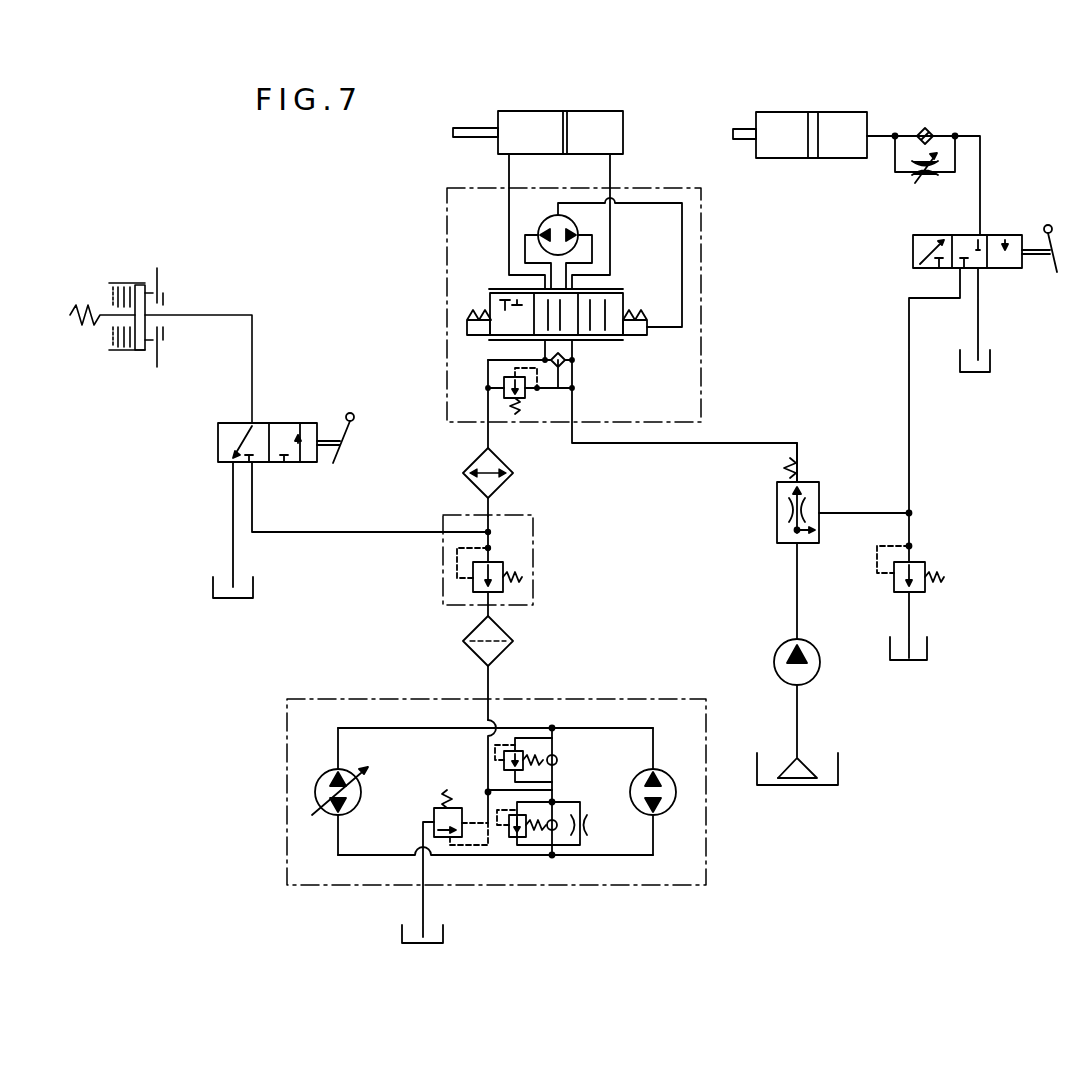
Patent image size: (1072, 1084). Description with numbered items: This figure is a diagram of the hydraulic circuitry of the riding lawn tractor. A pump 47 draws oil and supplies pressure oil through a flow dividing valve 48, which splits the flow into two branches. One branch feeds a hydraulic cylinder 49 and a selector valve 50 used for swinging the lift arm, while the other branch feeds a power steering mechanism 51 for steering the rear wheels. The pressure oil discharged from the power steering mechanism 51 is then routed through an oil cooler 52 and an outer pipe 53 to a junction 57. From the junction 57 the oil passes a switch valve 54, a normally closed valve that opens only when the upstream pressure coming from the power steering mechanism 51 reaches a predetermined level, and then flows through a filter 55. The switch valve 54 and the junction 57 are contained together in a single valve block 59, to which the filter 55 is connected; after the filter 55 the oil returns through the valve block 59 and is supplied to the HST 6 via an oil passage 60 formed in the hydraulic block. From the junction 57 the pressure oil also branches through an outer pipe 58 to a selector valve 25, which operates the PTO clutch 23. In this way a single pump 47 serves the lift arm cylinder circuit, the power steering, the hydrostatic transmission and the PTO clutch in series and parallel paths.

The HST 6 is at (657, 698).
The PTO clutch 23 is at (127, 357).
The selector valve 25 is at (283, 423).
The pump 47 is at (778, 667).
The flow dividing valve 48 is at (777, 517).
The hydraulic cylinder 49 is at (832, 158).
The selector valve 50 is at (1007, 235).
The power steering mechanism 51 is at (445, 258).
The oil cooler 52 is at (507, 463).
The outer pipe 53 is at (487, 507).
The switch valve 54 is at (503, 590).
The filter 55 is at (507, 652).
The junction 57 is at (492, 533).
The outer pipe 58 is at (300, 533).
The valve block 59 is at (443, 582).
The oil passage 60 is at (485, 687).